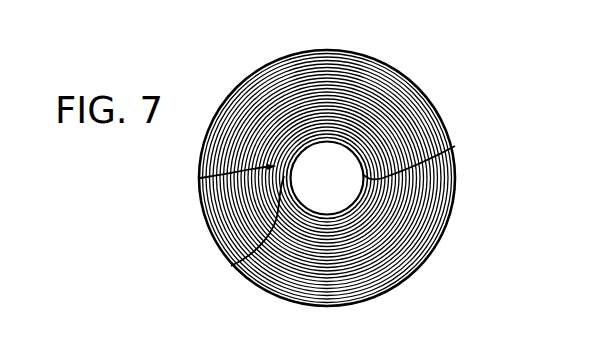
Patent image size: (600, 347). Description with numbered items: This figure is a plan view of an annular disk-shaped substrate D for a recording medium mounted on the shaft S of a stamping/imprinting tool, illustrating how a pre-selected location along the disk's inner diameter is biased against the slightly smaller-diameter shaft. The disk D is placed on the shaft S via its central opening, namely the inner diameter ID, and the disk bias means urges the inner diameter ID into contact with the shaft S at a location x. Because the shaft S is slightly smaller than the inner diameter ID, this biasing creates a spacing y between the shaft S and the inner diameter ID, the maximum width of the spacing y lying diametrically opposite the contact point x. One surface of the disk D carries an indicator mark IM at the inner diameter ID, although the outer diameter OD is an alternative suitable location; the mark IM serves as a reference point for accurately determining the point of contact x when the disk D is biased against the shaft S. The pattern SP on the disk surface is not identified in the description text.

The disk D is at (327, 160).
The spiral track pattern SP is at (312, 87).
The shaft S is at (328, 176).
The outer diameter OD is at (448, 179).
The inner diameter ID is at (343, 192).
The indicator mark IM is at (192, 170).
The location of contact x is at (223, 258).
The spacing y is at (447, 138).